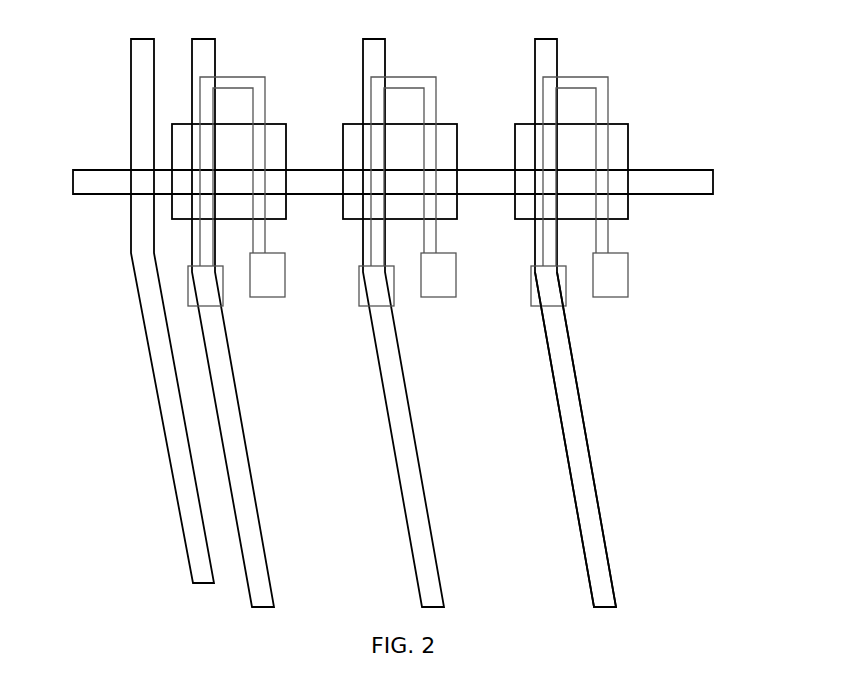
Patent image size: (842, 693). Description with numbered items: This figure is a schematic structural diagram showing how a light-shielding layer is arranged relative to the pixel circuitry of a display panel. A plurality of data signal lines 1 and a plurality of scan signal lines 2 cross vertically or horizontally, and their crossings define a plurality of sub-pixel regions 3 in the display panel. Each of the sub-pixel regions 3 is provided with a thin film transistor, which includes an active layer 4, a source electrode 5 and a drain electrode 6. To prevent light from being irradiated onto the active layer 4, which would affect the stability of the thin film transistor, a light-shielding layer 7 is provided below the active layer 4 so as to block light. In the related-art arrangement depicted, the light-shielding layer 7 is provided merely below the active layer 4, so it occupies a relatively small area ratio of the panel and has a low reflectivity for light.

The data signal line 1 is at (549, 52).
The scan signal line 2 is at (700, 183).
The sub-pixel region 3 is at (508, 400).
The active layer 4 is at (602, 102).
The source electrode 5 is at (563, 288).
The drain electrode 6 is at (625, 275).
The light-shielding layer 7 is at (617, 147).